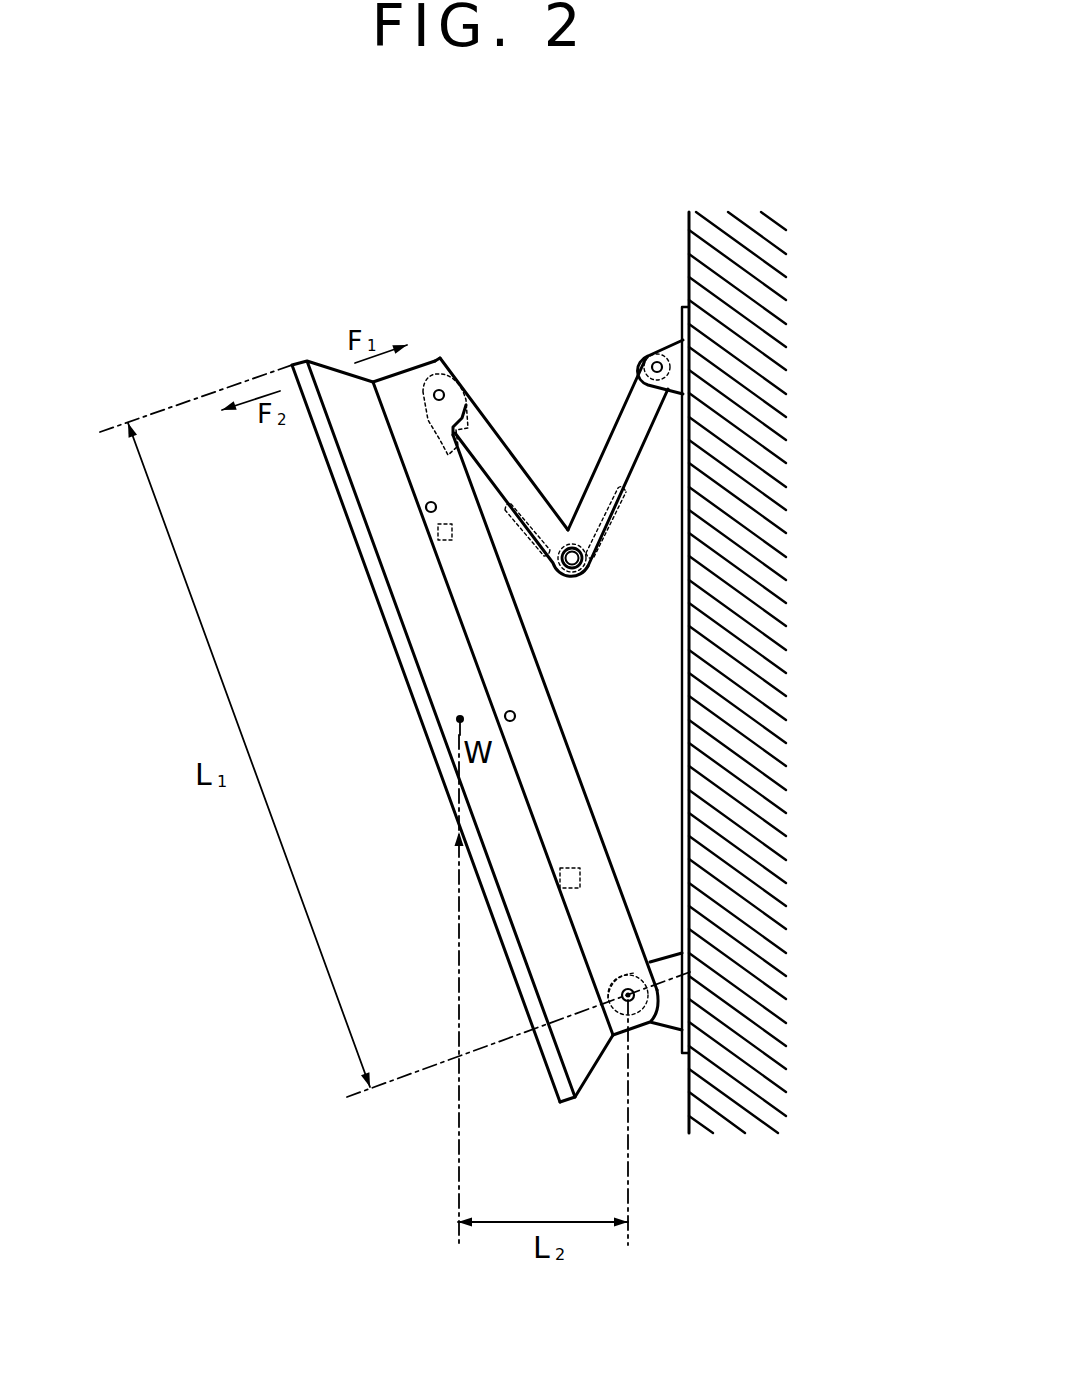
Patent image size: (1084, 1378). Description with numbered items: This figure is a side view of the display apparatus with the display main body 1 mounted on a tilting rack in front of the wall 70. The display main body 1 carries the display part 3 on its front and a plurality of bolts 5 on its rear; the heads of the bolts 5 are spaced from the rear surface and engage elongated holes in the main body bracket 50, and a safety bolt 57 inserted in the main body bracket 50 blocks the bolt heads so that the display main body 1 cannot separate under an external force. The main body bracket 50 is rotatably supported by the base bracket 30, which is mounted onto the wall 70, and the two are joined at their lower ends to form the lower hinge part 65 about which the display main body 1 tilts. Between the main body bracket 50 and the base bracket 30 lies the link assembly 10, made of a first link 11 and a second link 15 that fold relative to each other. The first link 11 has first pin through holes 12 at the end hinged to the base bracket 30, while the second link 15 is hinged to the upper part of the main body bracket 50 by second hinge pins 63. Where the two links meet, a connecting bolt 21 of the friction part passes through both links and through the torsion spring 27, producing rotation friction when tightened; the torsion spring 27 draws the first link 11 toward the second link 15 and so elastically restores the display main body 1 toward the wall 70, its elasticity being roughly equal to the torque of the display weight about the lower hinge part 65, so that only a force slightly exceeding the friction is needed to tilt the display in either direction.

The display main body 1 is at (538, 1062).
The display part 3 is at (410, 690).
The bolts 5 is at (570, 872).
The link assembly 10 is at (513, 392).
The first link 11 is at (610, 452).
The first pin through holes 12 is at (645, 358).
The second link 15 is at (499, 450).
The connecting bolt 21 is at (584, 566).
The torsion spring 27 is at (608, 508).
The base bracket 30 is at (684, 323).
The main body bracket 50 is at (437, 360).
The safety bolt 57 is at (508, 712).
The second hinge pins 63 is at (441, 389).
The lower hinge part 65 is at (656, 1049).
The wall 70 is at (696, 590).